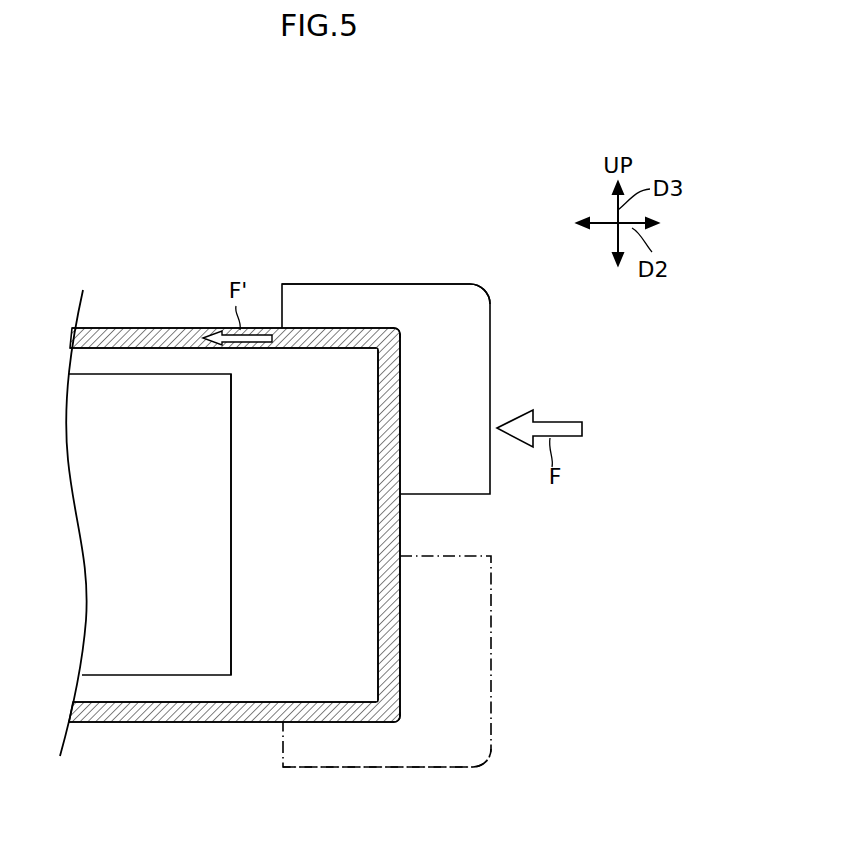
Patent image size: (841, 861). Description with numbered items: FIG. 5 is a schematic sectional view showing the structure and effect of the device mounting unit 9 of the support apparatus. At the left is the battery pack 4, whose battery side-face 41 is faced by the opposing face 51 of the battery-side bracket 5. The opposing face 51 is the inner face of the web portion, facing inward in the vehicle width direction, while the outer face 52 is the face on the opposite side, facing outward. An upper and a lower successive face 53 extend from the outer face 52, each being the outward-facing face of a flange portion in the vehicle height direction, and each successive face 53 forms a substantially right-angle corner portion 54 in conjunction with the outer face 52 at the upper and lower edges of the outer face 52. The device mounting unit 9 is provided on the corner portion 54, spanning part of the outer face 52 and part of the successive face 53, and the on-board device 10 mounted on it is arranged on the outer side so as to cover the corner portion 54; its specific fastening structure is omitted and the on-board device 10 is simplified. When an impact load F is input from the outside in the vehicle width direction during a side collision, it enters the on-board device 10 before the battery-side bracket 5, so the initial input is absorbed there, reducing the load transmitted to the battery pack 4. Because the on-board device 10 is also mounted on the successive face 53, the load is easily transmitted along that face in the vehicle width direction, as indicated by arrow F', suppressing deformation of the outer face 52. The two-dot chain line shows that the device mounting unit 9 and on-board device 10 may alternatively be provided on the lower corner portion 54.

The battery pack 4 is at (146, 540).
The battery side-face 41 is at (233, 532).
The battery-side bracket 5 is at (192, 290).
The opposing face 51 is at (378, 579).
The outer face 52 is at (400, 580).
The successive face 53 is at (155, 326).
The corner portion 54 is at (405, 328).
The device mounting unit 9 is at (412, 361).
The on-board device 10 is at (400, 276).